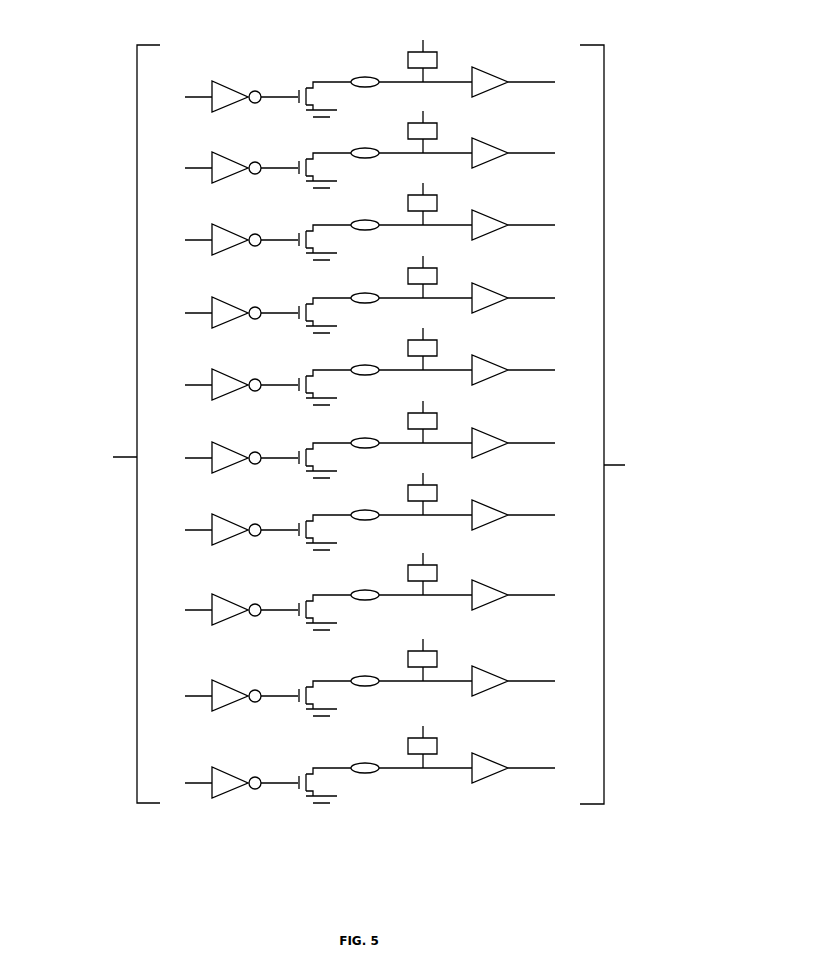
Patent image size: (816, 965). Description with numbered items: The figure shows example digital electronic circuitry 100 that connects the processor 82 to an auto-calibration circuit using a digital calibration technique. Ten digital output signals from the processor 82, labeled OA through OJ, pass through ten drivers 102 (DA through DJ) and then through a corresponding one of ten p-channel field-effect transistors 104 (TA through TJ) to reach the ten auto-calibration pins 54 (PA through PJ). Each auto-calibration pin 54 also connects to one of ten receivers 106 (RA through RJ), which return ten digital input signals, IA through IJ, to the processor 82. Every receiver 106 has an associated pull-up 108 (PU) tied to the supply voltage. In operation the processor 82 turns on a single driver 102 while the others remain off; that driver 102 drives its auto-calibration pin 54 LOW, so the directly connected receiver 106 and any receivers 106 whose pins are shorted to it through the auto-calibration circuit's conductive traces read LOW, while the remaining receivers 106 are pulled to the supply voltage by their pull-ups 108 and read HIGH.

The digital electronic circuitry 100 is at (274, 863).
The drivers 102 is at (226, 70).
The p-channel field-effect transistors 104 is at (304, 67).
The auto-calibration pins 54 is at (358, 62).
The pull-up 108 is at (438, 55).
The receivers 106 is at (498, 47).
The processor 82 is at (374, 457).